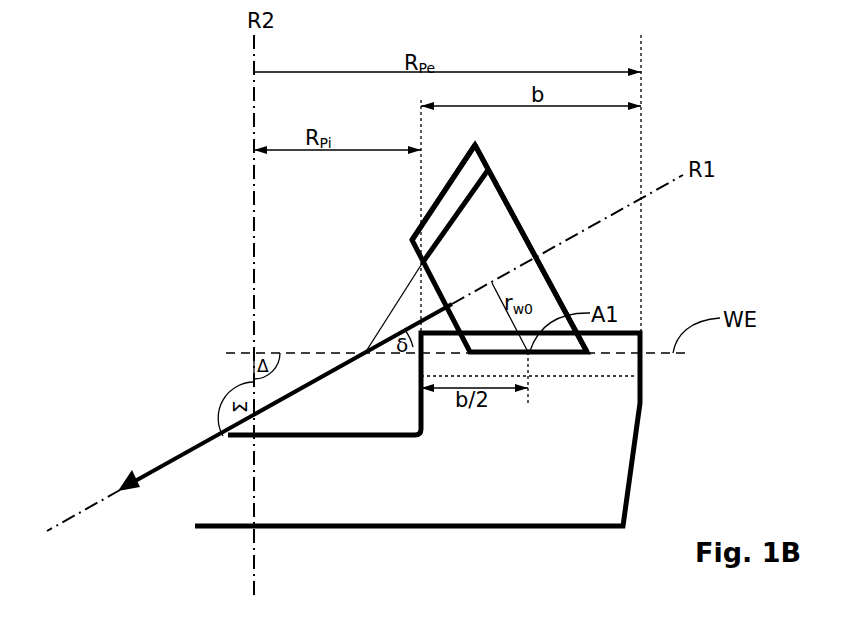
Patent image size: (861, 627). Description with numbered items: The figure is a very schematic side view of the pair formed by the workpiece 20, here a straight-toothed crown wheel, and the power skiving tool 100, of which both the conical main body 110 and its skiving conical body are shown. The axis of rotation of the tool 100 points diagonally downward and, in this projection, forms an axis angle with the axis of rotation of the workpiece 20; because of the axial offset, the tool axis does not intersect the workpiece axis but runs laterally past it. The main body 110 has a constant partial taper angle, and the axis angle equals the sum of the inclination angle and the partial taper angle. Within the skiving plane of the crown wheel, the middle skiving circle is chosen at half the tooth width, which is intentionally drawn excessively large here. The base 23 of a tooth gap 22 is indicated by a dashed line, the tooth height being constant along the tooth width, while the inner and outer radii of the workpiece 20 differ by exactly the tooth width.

The power skiving tool 100 is at (527, 177).
The conical main body 110 is at (510, 211).
The workpiece 20 is at (625, 490).
The tooth gap 22 is at (625, 363).
The base of the tooth gap 23 is at (620, 377).